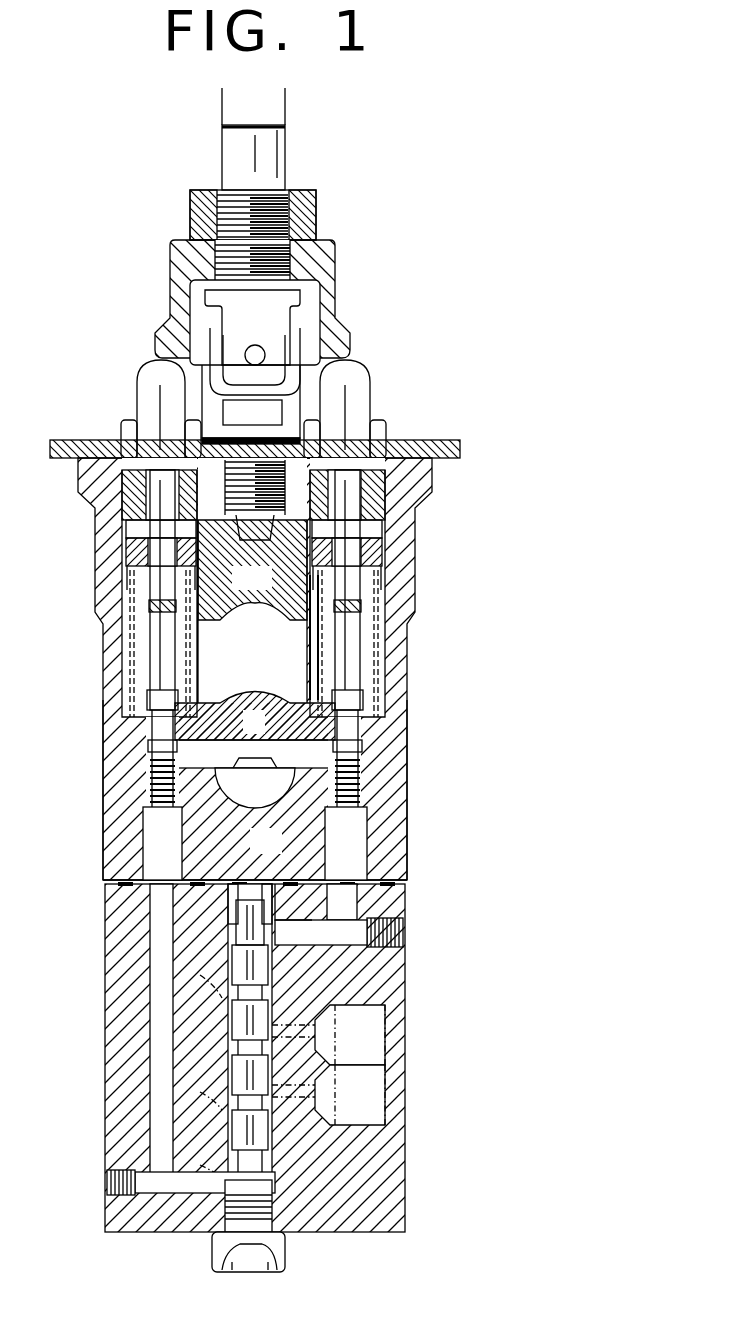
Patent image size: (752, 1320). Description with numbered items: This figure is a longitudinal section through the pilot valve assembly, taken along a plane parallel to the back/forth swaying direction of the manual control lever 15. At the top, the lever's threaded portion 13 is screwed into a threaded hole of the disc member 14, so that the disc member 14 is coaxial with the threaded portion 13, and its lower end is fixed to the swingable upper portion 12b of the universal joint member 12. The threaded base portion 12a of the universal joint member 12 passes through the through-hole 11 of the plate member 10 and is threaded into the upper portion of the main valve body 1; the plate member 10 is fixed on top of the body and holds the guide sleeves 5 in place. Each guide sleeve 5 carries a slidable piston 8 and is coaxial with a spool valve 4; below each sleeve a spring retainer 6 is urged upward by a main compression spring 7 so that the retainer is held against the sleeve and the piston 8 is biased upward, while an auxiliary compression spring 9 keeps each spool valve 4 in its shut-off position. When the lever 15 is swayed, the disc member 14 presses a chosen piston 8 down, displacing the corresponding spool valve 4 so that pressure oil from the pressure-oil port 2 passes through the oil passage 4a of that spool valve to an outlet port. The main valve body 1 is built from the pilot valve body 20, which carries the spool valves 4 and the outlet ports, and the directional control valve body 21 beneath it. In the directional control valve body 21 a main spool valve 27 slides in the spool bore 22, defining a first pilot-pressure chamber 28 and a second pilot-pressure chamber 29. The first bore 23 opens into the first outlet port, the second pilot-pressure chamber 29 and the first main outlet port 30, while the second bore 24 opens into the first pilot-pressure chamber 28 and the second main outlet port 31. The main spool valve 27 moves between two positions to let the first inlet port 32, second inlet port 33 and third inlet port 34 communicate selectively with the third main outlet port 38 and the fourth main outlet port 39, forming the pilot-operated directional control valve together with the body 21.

The main valve body 1 is at (411, 672).
The pressure-oil port 2 is at (240, 746).
The spool valve 4 is at (126, 708).
The oil passage 4a is at (146, 792).
The guide sleeve 5 is at (388, 483).
The spring retainer 6 is at (384, 554).
The main compression spring 7 is at (385, 590).
The piston 8 is at (362, 392).
The auxiliary compression spring 9 is at (333, 680).
The plate member 10 is at (422, 440).
The through-hole 11 is at (224, 456).
The universal joint member 12 is at (292, 368).
The threaded base portion 12a is at (252, 540).
The swingable upper portion 12b is at (282, 330).
The threaded portion 13 is at (291, 192).
The disc member 14 is at (175, 332).
The manual control lever 15 is at (287, 118).
The pilot valve body 20 is at (408, 742).
The directional control valve body 21 is at (388, 980).
The spool bore 22 is at (270, 972).
The first bore 23 is at (154, 972).
The second bore 24 is at (372, 900).
The main spool valve 27 is at (270, 1006).
The first pilot-pressure chamber 28 is at (262, 884).
The second pilot-pressure chamber 29 is at (276, 1184).
The first main outlet port 30 is at (110, 1190).
The second main outlet port 31 is at (428, 938).
The first inlet port 32 is at (367, 850).
The second inlet port 33 is at (200, 977).
The third inlet port 34 is at (200, 1163).
The third main outlet port 38 is at (396, 1120).
The fourth main outlet port 39 is at (392, 1030).